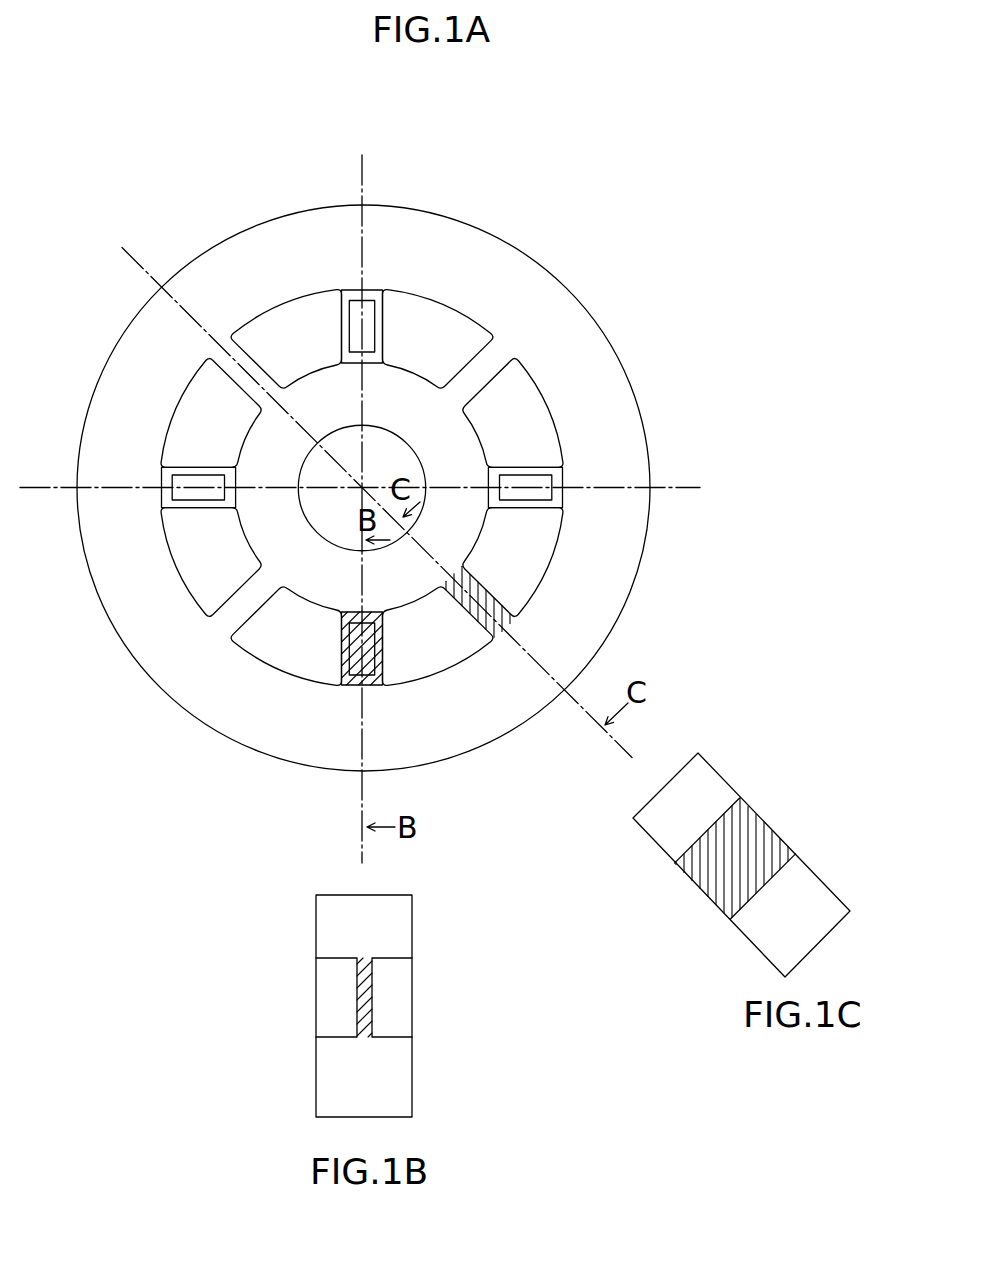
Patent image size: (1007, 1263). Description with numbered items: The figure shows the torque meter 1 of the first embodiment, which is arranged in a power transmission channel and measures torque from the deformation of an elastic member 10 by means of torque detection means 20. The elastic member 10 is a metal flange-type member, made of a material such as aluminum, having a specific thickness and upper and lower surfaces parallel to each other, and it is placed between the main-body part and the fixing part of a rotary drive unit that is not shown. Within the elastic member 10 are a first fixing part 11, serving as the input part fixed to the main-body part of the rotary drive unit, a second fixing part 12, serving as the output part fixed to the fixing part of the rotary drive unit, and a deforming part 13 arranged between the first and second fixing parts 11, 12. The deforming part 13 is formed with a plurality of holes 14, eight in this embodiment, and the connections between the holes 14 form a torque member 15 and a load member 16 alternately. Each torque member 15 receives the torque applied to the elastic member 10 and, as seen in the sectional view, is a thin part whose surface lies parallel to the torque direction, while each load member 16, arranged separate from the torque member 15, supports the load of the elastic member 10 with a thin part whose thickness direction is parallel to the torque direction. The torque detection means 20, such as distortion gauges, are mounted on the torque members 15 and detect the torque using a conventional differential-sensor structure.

In FIG. 1A, the torque meter 1 is at (482, 128).
In FIG. 1A, the elastic member 10 is at (383, 219).
In FIG. 1A, the first fixing part 11 is at (413, 400).
In FIG. 1A, the second fixing part 12 is at (468, 249).
In FIG. 1A, the deforming part 13 is at (612, 785).
In FIG. 1A, the hole 14 is at (437, 647).
In FIG. 1A, the torque member 15 is at (350, 295).
In FIG. 1B, the torque member 15 is at (390, 987).
In FIG. 1A, the load member 16 is at (493, 356).
In FIG. 1C, the load member 16 is at (757, 837).
In FIG. 1A, the torque detection means 20 is at (368, 312).